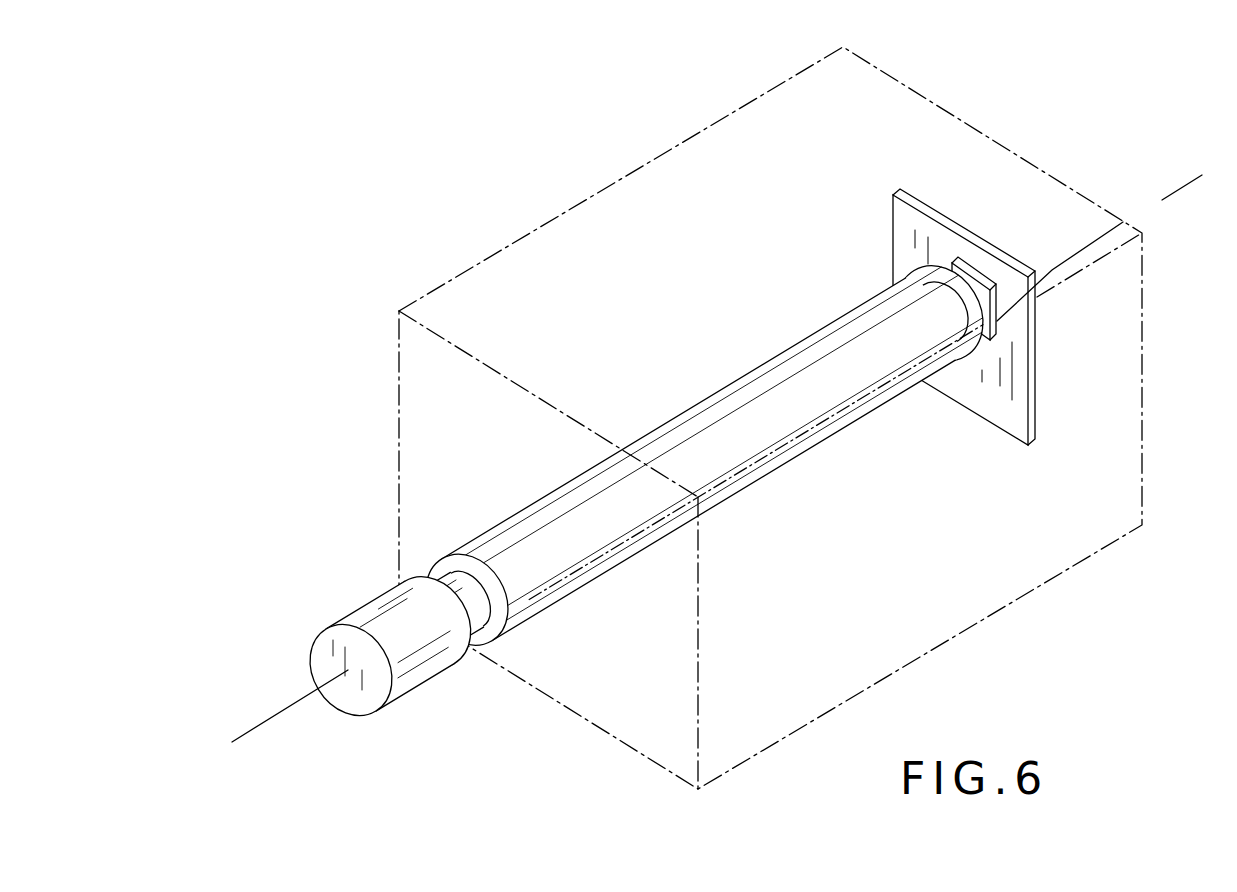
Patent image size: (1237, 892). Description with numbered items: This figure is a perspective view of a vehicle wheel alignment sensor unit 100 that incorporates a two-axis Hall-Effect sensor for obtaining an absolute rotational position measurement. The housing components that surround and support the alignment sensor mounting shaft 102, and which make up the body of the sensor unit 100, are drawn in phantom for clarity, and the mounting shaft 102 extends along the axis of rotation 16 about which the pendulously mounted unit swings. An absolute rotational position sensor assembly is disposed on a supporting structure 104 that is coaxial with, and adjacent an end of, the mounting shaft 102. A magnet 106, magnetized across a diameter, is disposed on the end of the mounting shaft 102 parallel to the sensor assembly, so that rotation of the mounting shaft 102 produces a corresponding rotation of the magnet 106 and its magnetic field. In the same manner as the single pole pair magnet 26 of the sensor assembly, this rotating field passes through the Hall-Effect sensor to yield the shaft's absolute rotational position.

The vehicle wheel alignment sensor unit 100 is at (934, 99).
The axis of rotation 16 is at (715, 458).
The alignment sensor mounting shaft 102 is at (762, 417).
The supporting structure 104 is at (1008, 296).
The single pole pair magnet 26 is at (1000, 323).
The magnet 106 is at (973, 344).